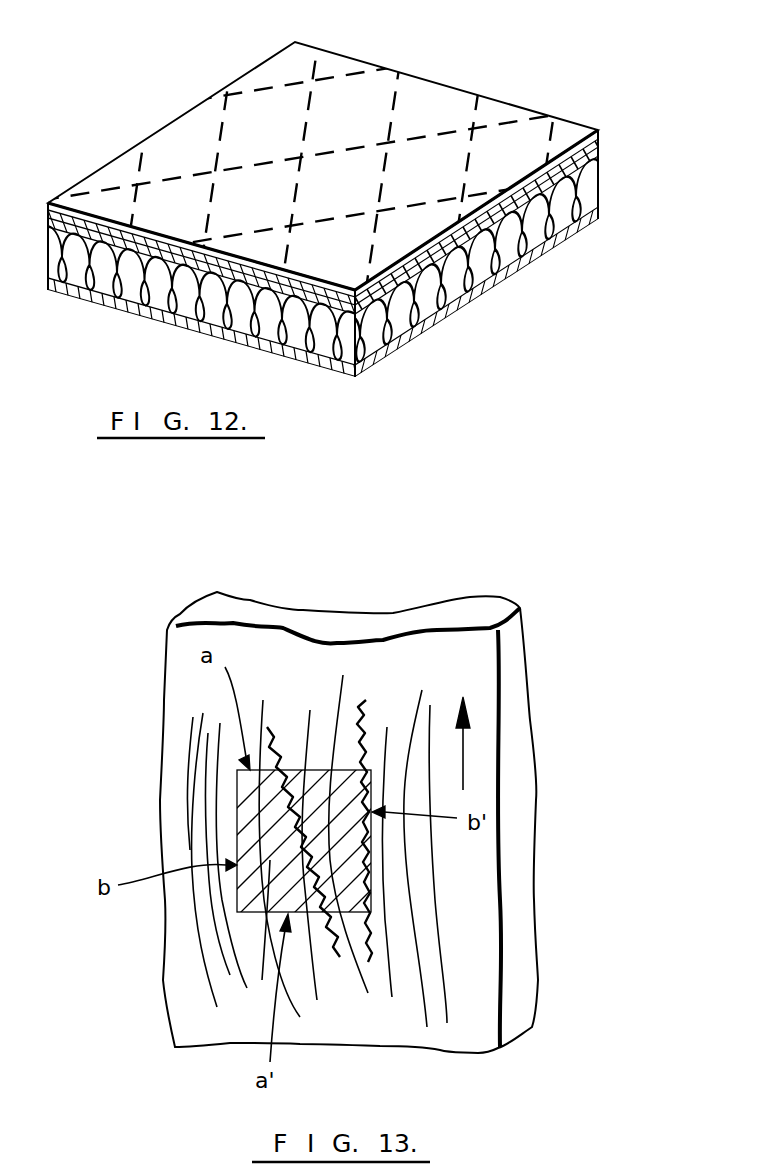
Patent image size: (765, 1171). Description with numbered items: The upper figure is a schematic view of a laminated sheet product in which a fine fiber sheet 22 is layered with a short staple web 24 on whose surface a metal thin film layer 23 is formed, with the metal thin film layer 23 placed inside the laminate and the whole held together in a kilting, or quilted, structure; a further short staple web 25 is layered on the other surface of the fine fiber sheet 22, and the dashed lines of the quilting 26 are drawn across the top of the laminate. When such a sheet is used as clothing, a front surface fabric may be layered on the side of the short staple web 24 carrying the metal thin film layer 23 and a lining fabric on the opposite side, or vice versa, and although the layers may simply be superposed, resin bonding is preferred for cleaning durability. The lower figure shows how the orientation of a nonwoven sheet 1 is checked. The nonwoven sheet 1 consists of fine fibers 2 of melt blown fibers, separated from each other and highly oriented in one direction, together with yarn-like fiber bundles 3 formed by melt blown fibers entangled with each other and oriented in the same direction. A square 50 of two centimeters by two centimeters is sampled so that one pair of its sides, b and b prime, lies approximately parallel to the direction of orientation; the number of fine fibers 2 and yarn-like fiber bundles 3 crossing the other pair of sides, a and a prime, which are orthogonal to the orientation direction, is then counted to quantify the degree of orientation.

In FIG. 13, the nonwoven sheet 1 is at (525, 670).
In FIG. 13, the fine fibers 2 is at (299, 690).
In FIG. 13, the yarn-like fiber bundles 3 is at (360, 706).
In FIG. 13, the square 50 is at (245, 798).
In FIG. 12, the fine fiber sheet 22 is at (373, 328).
In FIG. 12, the metal thin film layer 23 is at (600, 144).
In FIG. 12, the short staple web 24 is at (563, 122).
In FIG. 12, the short staple web 25 is at (538, 253).
In FIG. 12, the stitch lines 26 is at (398, 102).